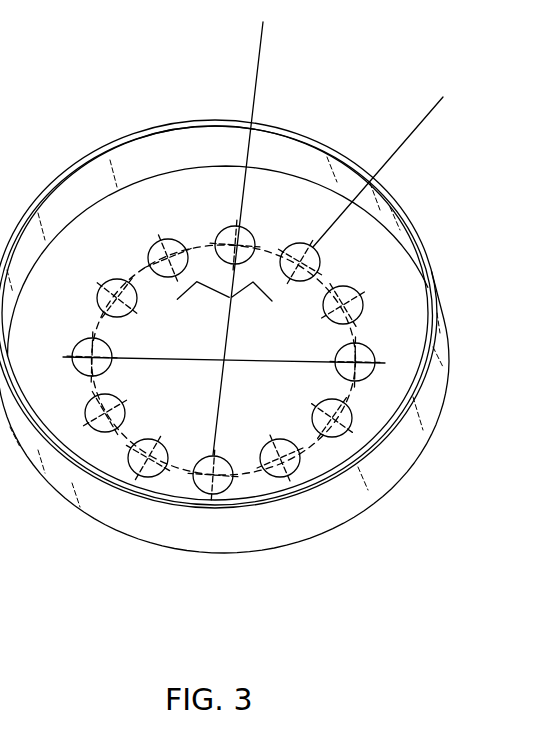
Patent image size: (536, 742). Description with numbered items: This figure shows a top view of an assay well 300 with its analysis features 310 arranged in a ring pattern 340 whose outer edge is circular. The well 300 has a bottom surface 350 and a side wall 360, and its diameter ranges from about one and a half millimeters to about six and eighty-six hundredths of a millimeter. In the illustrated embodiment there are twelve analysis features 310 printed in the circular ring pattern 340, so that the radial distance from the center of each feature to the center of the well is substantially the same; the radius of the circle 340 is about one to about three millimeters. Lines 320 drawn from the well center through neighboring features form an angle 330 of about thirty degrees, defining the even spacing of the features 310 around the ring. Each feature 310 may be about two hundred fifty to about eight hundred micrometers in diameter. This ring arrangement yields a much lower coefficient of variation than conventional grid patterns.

The assay well 300 is at (380, 558).
The analysis features 310 is at (104, 285).
The lines 320 is at (254, 100).
The angle 330 is at (208, 290).
The ring pattern 340 is at (202, 245).
The bottom surface 350 is at (412, 455).
The side wall 360 is at (440, 334).